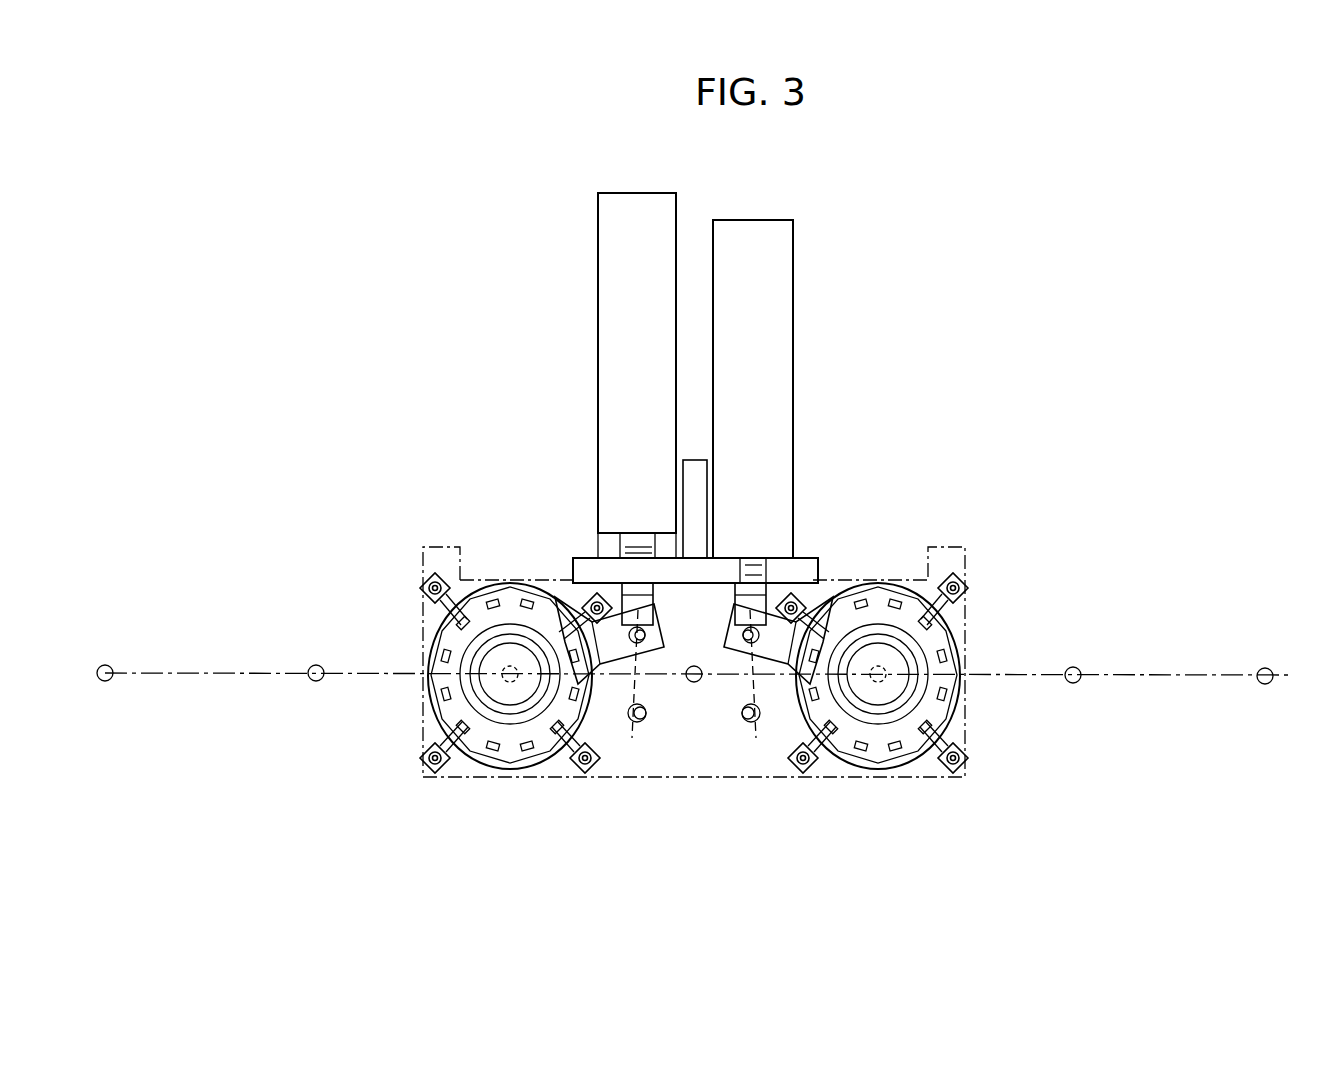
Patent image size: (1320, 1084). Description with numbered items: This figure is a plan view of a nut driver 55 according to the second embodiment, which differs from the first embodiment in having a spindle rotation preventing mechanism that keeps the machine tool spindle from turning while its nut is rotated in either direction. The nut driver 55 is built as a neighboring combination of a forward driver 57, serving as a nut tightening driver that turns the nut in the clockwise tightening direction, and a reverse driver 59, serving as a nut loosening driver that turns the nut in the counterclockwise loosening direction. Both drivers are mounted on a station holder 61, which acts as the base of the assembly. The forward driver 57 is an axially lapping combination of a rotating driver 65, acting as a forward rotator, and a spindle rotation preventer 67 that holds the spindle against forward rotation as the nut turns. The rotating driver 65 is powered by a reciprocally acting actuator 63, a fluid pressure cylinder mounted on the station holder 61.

The nut driver 55 is at (692, 568).
The forward driver 57 is at (846, 738).
The reverse driver 59 is at (530, 738).
The station holder 61 is at (723, 773).
The reciprocally acting actuator 63 is at (605, 323).
The rotating driver 65 is at (520, 758).
The spindle rotation preventer 67 is at (845, 772).